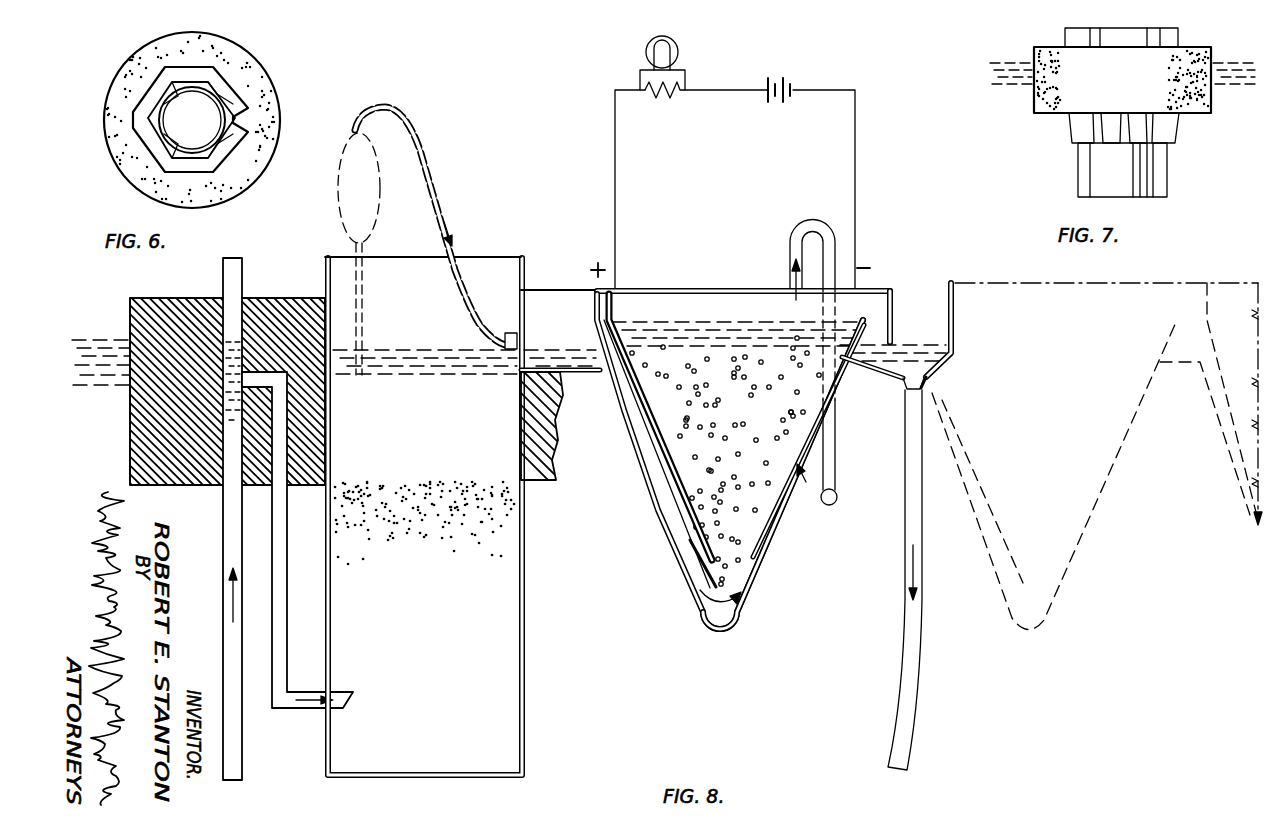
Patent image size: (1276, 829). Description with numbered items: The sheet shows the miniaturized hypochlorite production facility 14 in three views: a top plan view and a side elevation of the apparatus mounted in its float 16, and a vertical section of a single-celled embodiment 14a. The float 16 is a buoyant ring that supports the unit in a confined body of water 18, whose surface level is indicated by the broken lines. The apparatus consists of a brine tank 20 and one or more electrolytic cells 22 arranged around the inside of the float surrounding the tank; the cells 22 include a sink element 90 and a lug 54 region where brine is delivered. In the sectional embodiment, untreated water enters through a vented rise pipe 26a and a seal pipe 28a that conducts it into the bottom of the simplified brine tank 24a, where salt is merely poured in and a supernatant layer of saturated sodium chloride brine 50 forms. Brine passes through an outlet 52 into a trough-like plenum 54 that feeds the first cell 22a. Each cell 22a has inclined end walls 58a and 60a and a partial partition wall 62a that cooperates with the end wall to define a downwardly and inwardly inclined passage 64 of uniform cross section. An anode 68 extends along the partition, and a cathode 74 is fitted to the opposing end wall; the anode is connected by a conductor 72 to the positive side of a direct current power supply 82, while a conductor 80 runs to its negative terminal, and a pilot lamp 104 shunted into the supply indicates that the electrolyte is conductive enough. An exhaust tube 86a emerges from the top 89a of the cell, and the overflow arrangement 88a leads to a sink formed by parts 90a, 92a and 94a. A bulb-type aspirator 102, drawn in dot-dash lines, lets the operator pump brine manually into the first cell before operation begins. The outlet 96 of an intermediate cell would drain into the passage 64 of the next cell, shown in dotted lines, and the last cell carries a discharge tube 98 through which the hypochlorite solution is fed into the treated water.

In FIG. 6, the hypochlorite production facility 14 is at (125, 120).
In FIG. 7, the hypochlorite production facility 14 is at (1186, 36).
In FIG. 8, the hypochlorite production facility (FIG. 8 embodiment) 14a is at (485, 254).
In FIG. 6, the float 16 is at (257, 66).
In FIG. 7, the float 16 is at (1042, 98).
In FIG. 8, the float 16 is at (257, 312).
In FIG. 7, the body of water 18 is at (1010, 72).
In FIG. 8, the body of water 18 is at (90, 345).
In FIG. 6, the brine tank 20 is at (192, 120).
In FIG. 7, the brine tank 20 is at (1112, 168).
In FIG. 6, the electrolytic cell 22 is at (182, 165).
In FIG. 7, the electrolytic cell 22 is at (1110, 38).
In FIG. 8, the electrolytic cell (FIG. 8 embodiment) 22a is at (722, 312).
In FIG. 8, the brine tank (vessel) 24a is at (518, 650).
In FIG. 8, the vented rise pipe 26a is at (226, 518).
In FIG. 8, the seal pipe 28a is at (275, 700).
In FIG. 8, the sodium chloride brine 50 is at (407, 357).
In FIG. 8, the outlet 52 is at (519, 346).
In FIG. 6, the plenum 54 is at (237, 94).
In FIG. 8, the end wall 58a is at (652, 508).
In FIG. 8, the end wall 60a is at (760, 568).
In FIG. 8, the partial partition wall 62a is at (690, 533).
In FIG. 8, the passage 64 is at (643, 452).
In FIG. 8, the anode 68 is at (648, 420).
In FIG. 8, the electrical conductor 72 is at (617, 200).
In FIG. 8, the cathode 74 is at (782, 512).
In FIG. 8, the conductor 80 is at (857, 182).
In FIG. 8, the direct current power supply 82 is at (795, 80).
In FIG. 8, the exhaust tube 86a is at (836, 452).
In FIG. 8, the overflow arrangement 88a is at (850, 322).
In FIG. 8, the top 89a is at (670, 288).
In FIG. 6, the sink (element) 90 is at (240, 135).
In FIG. 8, the sink 90a is at (945, 362).
In FIG. 8, the sink 92a is at (957, 310).
In FIG. 8, the sink 94a is at (926, 386).
In FIG. 8, the outlet 96 is at (903, 382).
In FIG. 8, the discharge tube 98 is at (915, 660).
In FIG. 8, the aspirator 102 is at (375, 206).
In FIG. 8, the pilot lamp 104 is at (646, 52).